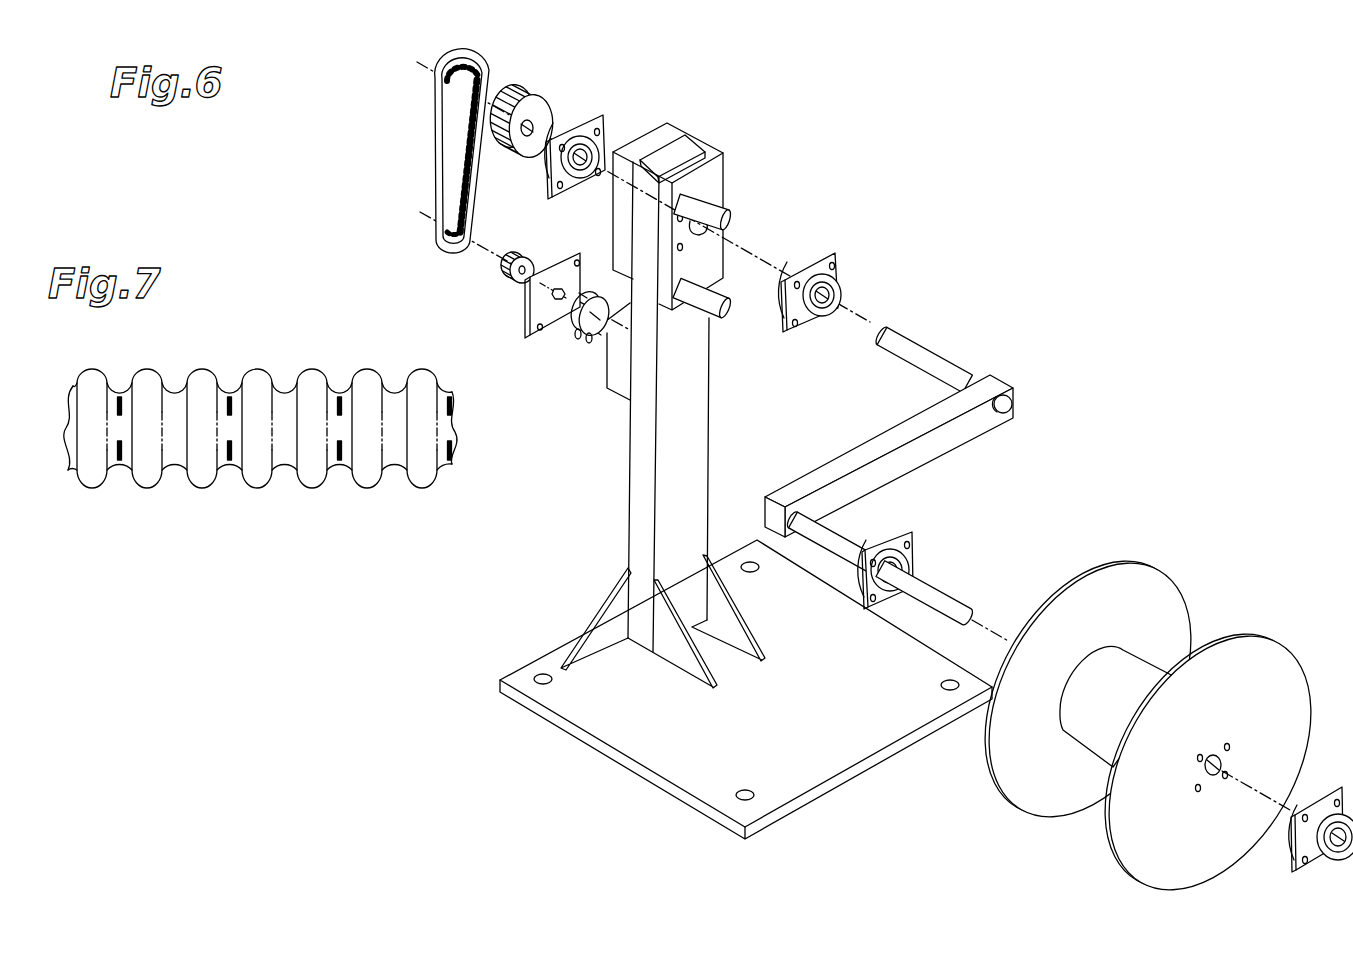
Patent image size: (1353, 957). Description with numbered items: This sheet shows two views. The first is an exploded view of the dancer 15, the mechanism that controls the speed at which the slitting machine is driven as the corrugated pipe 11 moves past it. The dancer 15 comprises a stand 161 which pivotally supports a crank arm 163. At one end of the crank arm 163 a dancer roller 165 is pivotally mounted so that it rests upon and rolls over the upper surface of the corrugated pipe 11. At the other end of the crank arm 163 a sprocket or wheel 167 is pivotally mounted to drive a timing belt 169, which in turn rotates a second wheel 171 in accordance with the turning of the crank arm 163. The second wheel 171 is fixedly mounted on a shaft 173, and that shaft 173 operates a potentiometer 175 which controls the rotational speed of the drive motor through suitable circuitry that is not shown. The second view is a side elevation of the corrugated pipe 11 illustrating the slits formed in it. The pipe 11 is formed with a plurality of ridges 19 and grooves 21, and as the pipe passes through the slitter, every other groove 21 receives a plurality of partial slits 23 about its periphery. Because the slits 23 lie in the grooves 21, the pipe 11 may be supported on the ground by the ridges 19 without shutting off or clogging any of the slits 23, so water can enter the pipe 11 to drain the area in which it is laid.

In FIG. 7, the corrugated pipe 11 is at (283, 506).
In FIG. 7, the ridges 19 is at (315, 369).
In FIG. 7, the grooves 21 is at (170, 402).
In FIG. 7, the partial slits 23 is at (232, 405).
In FIG. 6, the dancer 15 is at (840, 797).
In FIG. 6, the stand 161 is at (667, 410).
In FIG. 6, the crank arm 163 is at (960, 430).
In FIG. 6, the dancer roller 165 is at (1150, 585).
In FIG. 6, the sprocket or wheel 167 is at (540, 112).
In FIG. 6, the timing belt 169 is at (432, 158).
In FIG. 6, the second wheel 171 is at (531, 266).
In FIG. 6, the shaft 173 is at (567, 300).
In FIG. 6, the potentiometer 175 is at (592, 330).